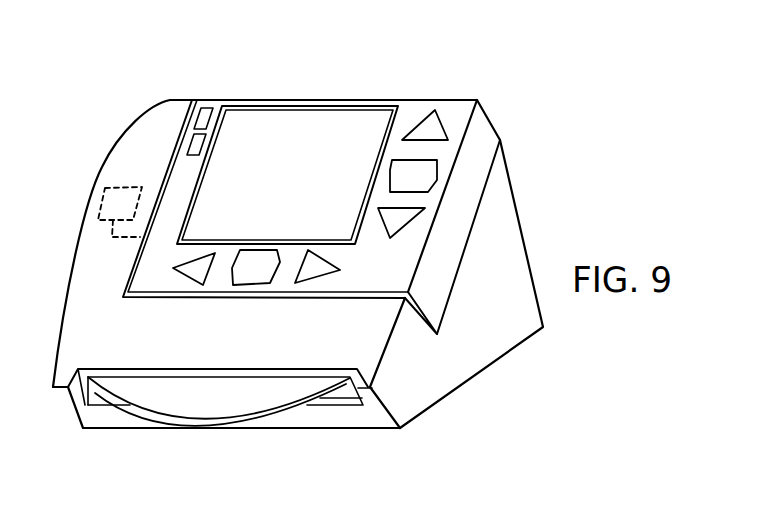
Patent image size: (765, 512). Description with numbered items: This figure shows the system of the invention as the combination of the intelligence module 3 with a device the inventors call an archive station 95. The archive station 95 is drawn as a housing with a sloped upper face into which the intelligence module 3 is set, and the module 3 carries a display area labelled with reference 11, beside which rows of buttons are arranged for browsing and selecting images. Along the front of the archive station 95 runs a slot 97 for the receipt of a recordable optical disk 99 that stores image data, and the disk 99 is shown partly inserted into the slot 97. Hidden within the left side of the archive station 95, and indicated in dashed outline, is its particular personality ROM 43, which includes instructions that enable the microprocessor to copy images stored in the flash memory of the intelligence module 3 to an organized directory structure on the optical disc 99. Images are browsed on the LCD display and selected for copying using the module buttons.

The intelligence module 3 is at (300, 190).
The display window 11 is at (287, 142).
The personality ROM 43 is at (98, 194).
The archive station 95 is at (170, 98).
The slot 97 is at (93, 397).
The recordable optical disk 99 is at (242, 408).